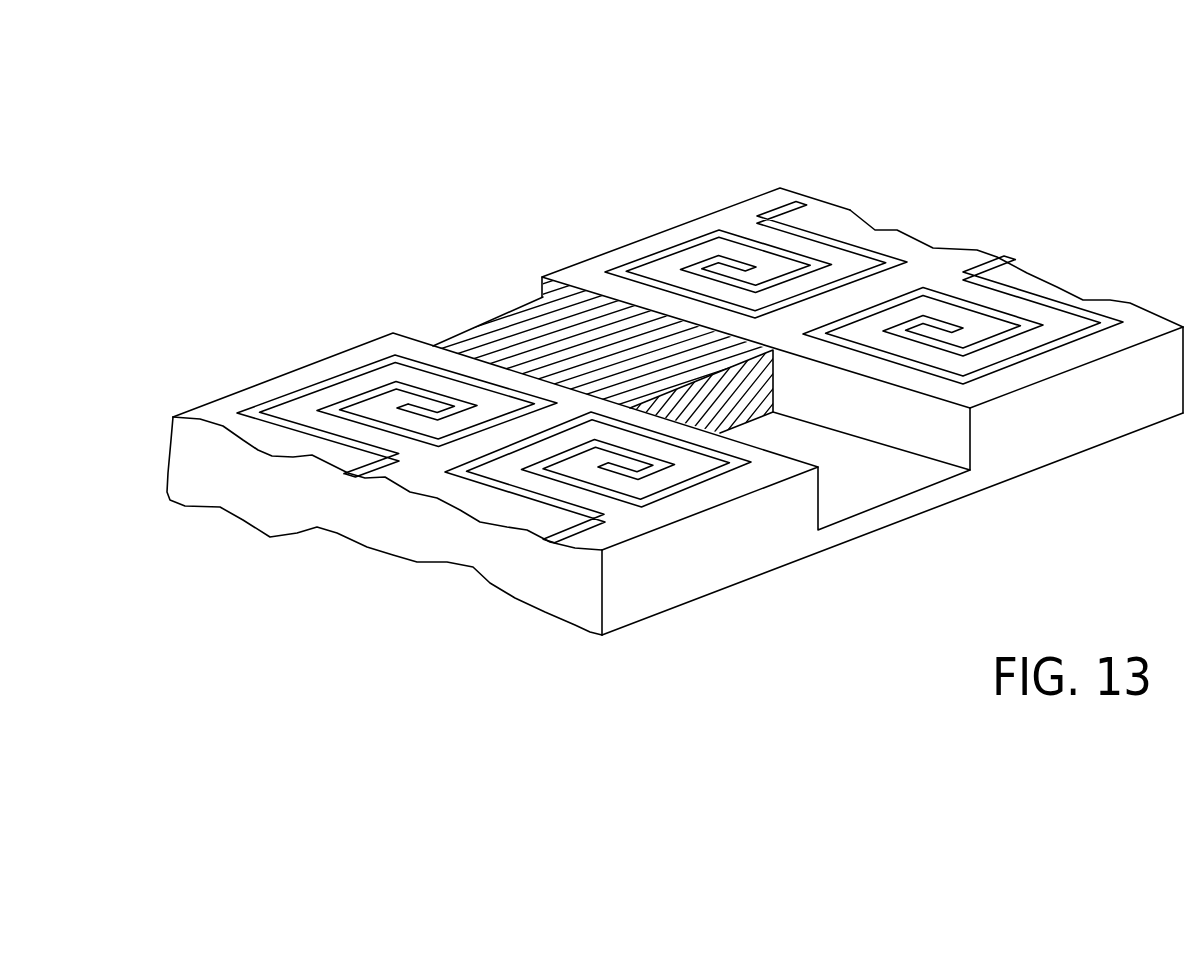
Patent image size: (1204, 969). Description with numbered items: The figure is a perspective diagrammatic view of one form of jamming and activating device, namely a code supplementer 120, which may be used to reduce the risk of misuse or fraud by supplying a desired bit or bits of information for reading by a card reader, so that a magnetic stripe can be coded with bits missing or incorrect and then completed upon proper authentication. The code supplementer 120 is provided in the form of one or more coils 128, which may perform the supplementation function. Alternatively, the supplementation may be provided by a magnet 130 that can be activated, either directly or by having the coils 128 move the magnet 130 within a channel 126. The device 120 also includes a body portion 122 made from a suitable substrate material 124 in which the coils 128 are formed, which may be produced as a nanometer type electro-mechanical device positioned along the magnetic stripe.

The code supplementer 120 is at (881, 92).
The body portion 122 is at (622, 247).
The substrate material 124 is at (217, 405).
The channel 126 is at (862, 470).
The coils 128 is at (1050, 303).
The magnet 130 is at (528, 340).